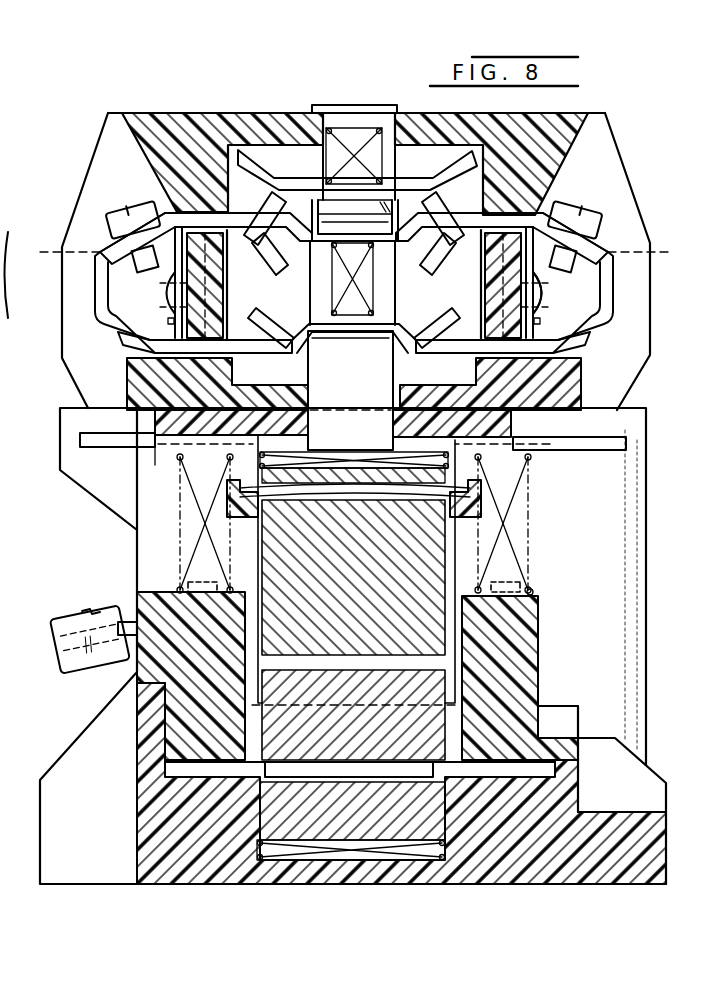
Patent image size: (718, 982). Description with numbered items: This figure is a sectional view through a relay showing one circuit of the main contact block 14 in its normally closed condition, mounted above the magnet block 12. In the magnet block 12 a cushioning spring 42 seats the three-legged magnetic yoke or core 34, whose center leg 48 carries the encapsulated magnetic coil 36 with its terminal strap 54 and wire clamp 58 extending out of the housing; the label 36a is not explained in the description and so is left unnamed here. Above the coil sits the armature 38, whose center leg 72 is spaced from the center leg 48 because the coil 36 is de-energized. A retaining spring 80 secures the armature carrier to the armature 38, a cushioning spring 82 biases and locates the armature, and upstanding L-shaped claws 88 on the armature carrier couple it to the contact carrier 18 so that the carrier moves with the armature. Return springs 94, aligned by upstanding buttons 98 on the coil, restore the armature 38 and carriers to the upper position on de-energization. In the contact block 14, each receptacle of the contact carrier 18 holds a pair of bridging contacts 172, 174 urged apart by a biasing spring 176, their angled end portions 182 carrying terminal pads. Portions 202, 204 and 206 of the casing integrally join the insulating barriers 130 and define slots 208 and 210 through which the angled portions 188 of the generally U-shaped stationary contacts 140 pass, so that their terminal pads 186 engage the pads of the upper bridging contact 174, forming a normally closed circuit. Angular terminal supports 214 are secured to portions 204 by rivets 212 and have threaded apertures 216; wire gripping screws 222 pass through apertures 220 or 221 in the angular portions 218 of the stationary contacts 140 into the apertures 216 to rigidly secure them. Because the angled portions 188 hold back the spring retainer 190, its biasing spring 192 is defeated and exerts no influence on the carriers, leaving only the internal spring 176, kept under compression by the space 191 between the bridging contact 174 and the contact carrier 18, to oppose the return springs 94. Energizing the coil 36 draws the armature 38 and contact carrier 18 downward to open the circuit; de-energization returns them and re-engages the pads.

The magnet block 12 is at (652, 582).
The contact block 14 is at (636, 182).
The contact carrier 18 is at (396, 303).
The magnetic yoke or core 34 is at (358, 816).
The magnetic coil 36 is at (131, 675).
The bottom plate 36a is at (397, 778).
The armature 38 is at (542, 593).
The cushioning spring 42 is at (292, 858).
The center leg 48 is at (360, 747).
The terminal strap 54 is at (58, 660).
The wire clamp 58 is at (74, 618).
The center leg of armature 72 is at (365, 567).
The retaining spring 80 is at (478, 507).
The cushioning spring 82 is at (480, 455).
The L-shaped projections or claws 88 is at (365, 401).
The return springs 94 is at (180, 542).
The upstanding buttons 98 is at (187, 582).
The insulating barriers 130 is at (666, 356).
The stationary contacts 140 is at (611, 282).
The bridging contact 172 is at (258, 319).
The bridging contact 174 is at (300, 250).
The biasing spring 176 is at (376, 278).
The angled end portions 182 is at (262, 244).
The terminal pads 186 is at (270, 205).
The angled portions 188 is at (444, 215).
The spring retainer 190 is at (258, 160).
The space 191 is at (330, 228).
The biasing spring 192 is at (385, 170).
The portion of casing block 202 is at (240, 113).
The portion of casing block 204 is at (232, 340).
The portion of casing block 206 is at (258, 384).
The slot 208 is at (168, 212).
The slot 210 is at (135, 352).
The rivets 212 is at (175, 290).
The angular terminal supports 214 is at (540, 320).
The threaded aperture 216 is at (98, 268).
The angular portions 218 is at (110, 333).
The aperture 220 is at (359, 248).
The aperture 221 is at (170, 322).
The wire gripping screws 222 is at (118, 214).